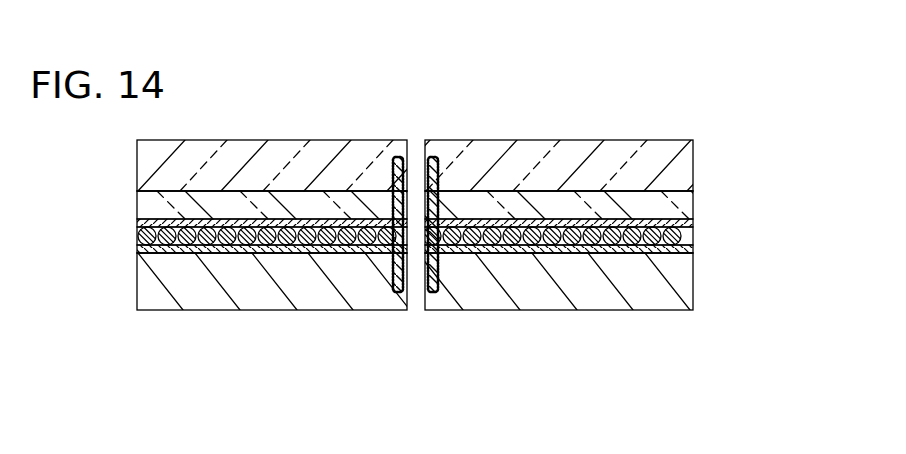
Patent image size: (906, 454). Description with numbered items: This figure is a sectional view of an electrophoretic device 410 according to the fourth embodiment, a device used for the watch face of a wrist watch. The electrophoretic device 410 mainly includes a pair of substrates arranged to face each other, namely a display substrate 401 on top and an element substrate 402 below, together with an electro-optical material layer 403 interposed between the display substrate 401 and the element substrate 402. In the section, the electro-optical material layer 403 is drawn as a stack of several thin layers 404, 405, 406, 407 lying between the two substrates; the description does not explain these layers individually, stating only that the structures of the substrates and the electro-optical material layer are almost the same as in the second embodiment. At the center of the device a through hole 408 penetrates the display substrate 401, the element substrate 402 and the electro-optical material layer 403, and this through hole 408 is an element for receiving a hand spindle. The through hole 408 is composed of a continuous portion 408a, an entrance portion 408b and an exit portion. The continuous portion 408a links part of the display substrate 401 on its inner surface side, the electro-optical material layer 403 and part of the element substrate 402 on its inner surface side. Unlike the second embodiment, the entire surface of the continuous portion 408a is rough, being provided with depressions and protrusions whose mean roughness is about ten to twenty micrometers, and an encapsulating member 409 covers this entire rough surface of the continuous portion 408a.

The display substrate 401 is at (673, 163).
The element substrate 402 is at (673, 282).
The electro-optical material layer 403 is at (703, 190).
The resin layer 404 is at (137, 196).
The upper adhesive layer 405 is at (137, 222).
The fiber layer 406 is at (142, 237).
The lower adhesive layer 407 is at (137, 250).
The through hole 408 is at (418, 126).
The continuous portion 408a is at (424, 294).
The entrance portion 408b is at (412, 141).
The encapsulating member 409 is at (399, 289).
The electrophoretic device 410 is at (611, 104).